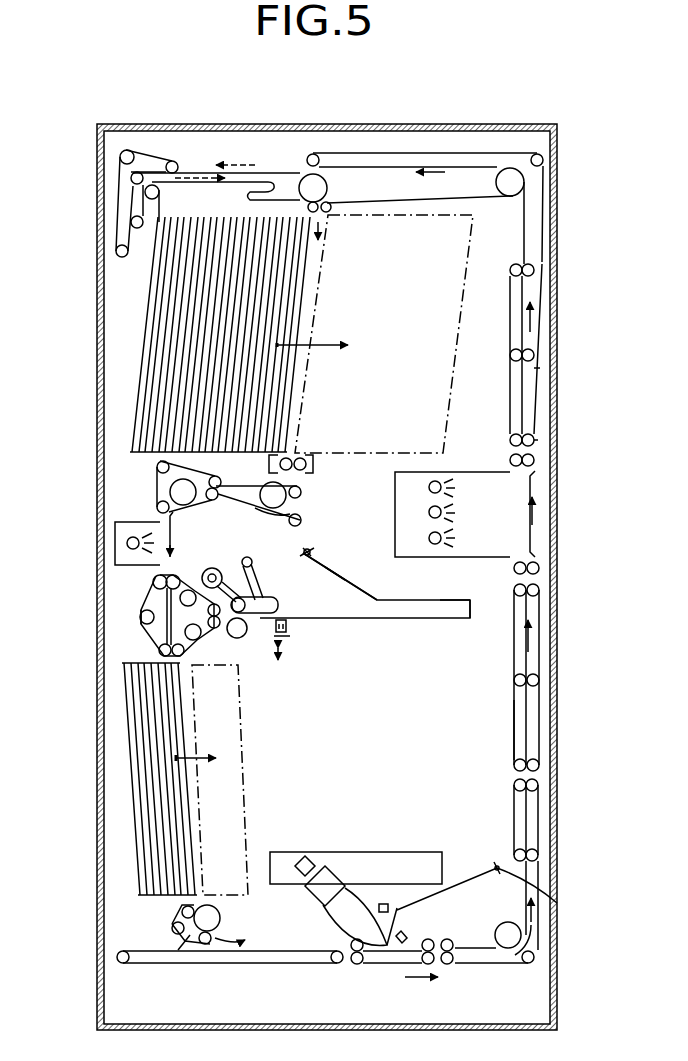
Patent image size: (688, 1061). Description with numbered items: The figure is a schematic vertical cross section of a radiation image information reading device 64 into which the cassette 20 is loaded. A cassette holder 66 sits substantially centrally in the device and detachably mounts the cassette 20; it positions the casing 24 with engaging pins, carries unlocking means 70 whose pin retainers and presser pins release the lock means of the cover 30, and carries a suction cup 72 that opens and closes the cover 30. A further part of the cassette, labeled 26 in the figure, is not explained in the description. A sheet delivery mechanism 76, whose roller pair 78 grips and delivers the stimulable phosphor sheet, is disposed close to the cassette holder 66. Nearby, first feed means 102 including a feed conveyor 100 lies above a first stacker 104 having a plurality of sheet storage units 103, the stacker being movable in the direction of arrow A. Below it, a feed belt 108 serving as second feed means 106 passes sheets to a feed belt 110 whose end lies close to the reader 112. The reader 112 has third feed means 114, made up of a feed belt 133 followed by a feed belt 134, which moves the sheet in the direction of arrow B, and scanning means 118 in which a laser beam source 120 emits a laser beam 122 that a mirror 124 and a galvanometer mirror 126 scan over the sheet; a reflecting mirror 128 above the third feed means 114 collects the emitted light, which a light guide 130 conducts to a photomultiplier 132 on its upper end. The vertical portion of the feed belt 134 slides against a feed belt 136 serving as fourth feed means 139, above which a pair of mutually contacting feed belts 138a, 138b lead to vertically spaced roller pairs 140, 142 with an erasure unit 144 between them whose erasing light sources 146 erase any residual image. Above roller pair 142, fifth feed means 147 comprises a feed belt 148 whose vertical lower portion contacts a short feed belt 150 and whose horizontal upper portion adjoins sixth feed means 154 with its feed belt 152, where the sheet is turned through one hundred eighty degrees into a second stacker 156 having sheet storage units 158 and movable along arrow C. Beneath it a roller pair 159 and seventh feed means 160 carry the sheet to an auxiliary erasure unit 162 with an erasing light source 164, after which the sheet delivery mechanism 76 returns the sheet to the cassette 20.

The radiation image information reading device 64 is at (94, 342).
The sixth feed means 154 is at (150, 146).
The feed belt 152 is at (290, 172).
The second stacker 156 is at (134, 380).
The sheet storage units 158 is at (160, 288).
The short feed belt 150 is at (500, 308).
The feed belt 148 is at (540, 288).
The fifth feed means 147 is at (540, 368).
The roller pair 142 is at (540, 440).
The roller pair 159 is at (302, 458).
The erasure unit 144 is at (478, 486).
The erasing light sources 146 is at (434, 482).
The seventh feed means 160 is at (156, 480).
The erasing light source 164 is at (128, 540).
The auxiliary erasure unit 162 is at (113, 541).
The feed conveyor 100 is at (146, 598).
The first feed means 102 is at (141, 619).
The sheet delivery mechanism 76 is at (225, 566).
The roller pair 78 is at (241, 636).
The unlocking means 70 is at (287, 677).
The cassette 20 is at (403, 622).
The casing 24 is at (442, 620).
The support surface 26 is at (432, 598).
The cover 30 is at (356, 589).
The suction cup 72 is at (308, 548).
The cassette holder 66 is at (337, 576).
The roller pair 140 is at (540, 568).
The feed belt 138a is at (540, 716).
The feed belt 138b is at (512, 732).
The feed belt 136 is at (512, 790).
The fourth feed means 139 is at (542, 814).
The mirror 124 is at (548, 903).
The feed belt 134 is at (548, 868).
The laser beam 122 is at (465, 870).
The galvanometer mirror 126 is at (385, 903).
The reflecting mirror 128 is at (404, 934).
The laser beam source 120 is at (375, 870).
The photomultiplier 132 is at (301, 858).
The light guide 130 is at (345, 905).
The scanning means 118 is at (312, 828).
The reader 112 is at (336, 832).
The feed belt 133 is at (385, 964).
The third feed means 114 is at (360, 969).
The feed belt 110 is at (236, 965).
The second feed means 106 is at (160, 912).
The feed belt 108 is at (192, 940).
The first stacker 104 is at (130, 747).
The sheet storage units 103 is at (140, 700).